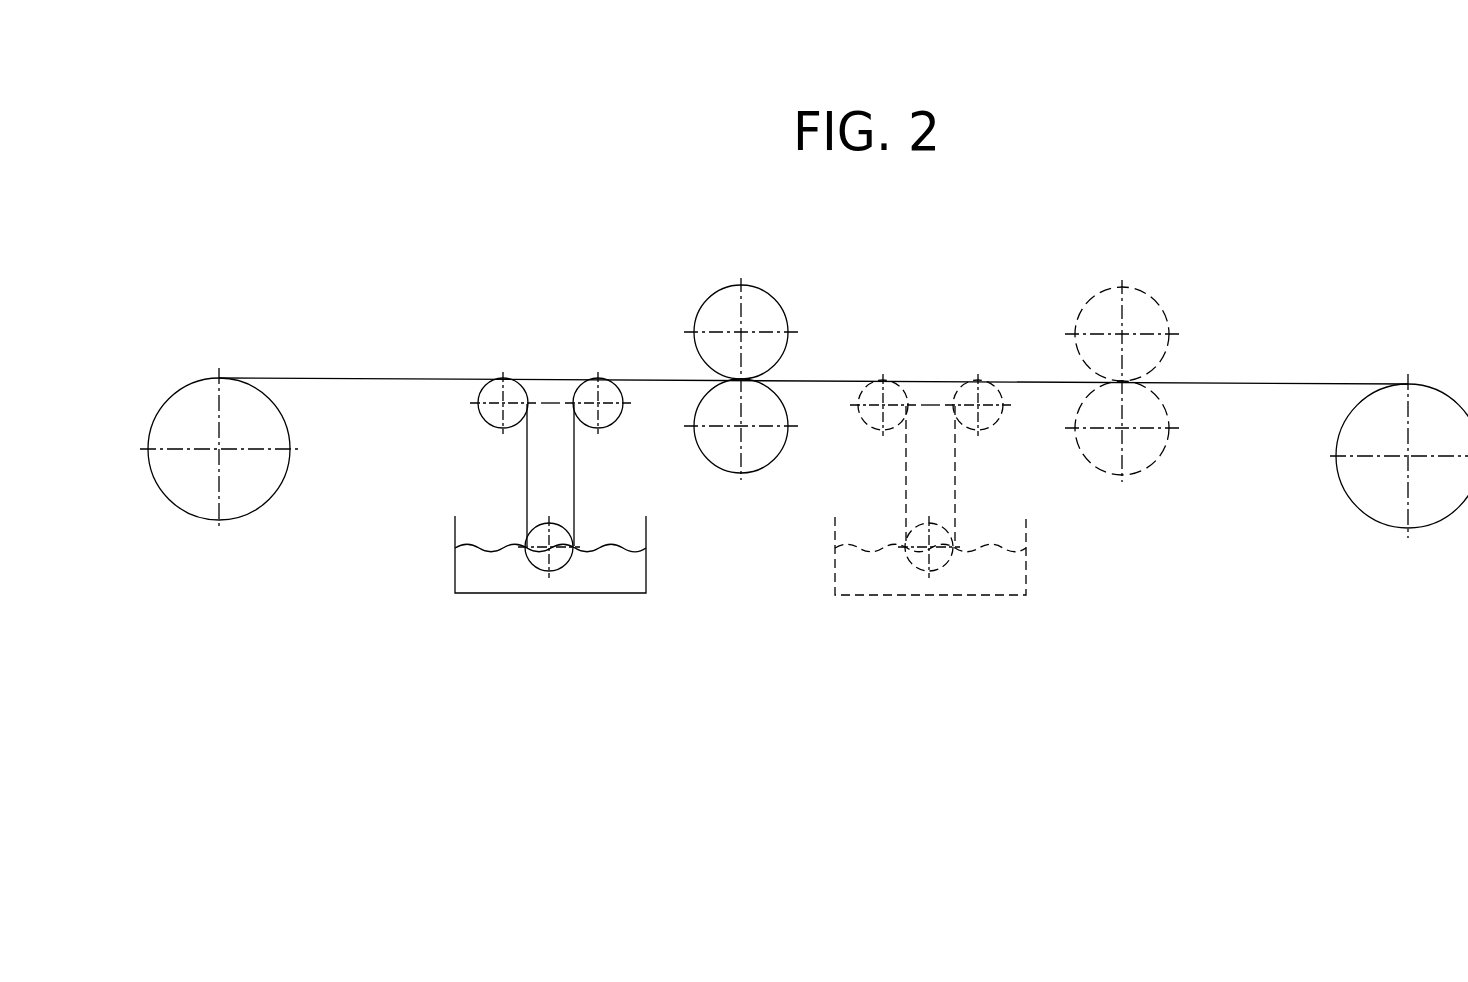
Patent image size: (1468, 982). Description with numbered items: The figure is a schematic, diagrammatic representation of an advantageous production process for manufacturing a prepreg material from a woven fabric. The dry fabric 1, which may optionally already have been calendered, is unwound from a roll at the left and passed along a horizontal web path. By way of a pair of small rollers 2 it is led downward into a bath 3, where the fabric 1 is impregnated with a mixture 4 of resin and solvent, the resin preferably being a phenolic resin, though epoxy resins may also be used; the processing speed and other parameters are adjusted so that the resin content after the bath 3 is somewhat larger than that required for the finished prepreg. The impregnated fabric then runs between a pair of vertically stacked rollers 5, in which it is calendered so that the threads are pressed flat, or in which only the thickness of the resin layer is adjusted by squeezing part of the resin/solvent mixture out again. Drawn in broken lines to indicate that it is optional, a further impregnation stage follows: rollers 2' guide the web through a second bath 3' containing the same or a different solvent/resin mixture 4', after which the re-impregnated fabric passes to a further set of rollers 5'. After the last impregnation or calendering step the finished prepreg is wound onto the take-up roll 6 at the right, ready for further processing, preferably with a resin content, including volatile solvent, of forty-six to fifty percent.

The dry fabric 1 is at (236, 500).
The rollers 2 is at (550, 381).
The bath 3 is at (550, 618).
The mixture of resin and solvent 4 is at (620, 600).
The rollers 5 is at (786, 332).
The rollers 2' is at (930, 399).
The bath 3' is at (930, 625).
The solvent/resin mixture 4' is at (989, 599).
The further set of rollers 5' is at (1162, 334).
The wind-up roll 6 is at (1375, 497).